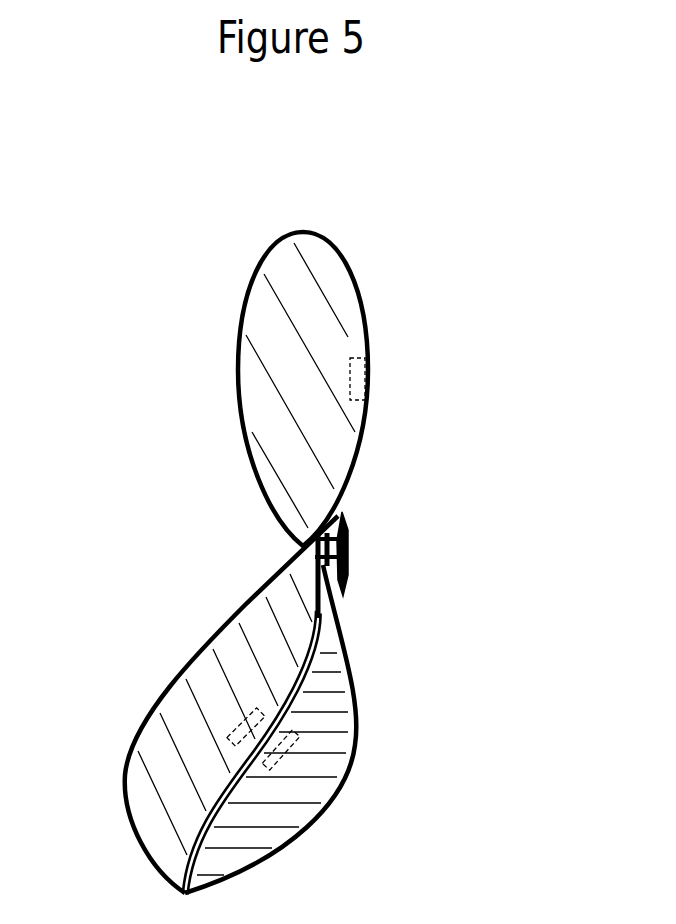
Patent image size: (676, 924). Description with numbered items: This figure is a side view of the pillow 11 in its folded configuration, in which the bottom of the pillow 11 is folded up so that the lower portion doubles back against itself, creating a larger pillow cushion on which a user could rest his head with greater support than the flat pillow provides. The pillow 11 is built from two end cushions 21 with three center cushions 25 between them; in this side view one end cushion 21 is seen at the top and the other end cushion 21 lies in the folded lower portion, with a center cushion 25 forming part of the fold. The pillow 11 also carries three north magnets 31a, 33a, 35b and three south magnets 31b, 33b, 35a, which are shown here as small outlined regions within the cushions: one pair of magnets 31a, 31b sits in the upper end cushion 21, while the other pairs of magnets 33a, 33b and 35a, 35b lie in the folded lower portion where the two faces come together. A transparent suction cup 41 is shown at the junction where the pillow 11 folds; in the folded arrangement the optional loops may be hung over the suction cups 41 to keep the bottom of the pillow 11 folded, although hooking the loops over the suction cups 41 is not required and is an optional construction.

The pillow 11 is at (246, 531).
The end cushion 21 is at (335, 295).
The center cushion 25 is at (256, 617).
The north magnet 31a is at (467, 388).
The south magnet 31b is at (367, 384).
The north magnet 33a is at (150, 660).
The south magnet 33b is at (245, 726).
The south magnet 35a is at (407, 698).
The north magnet 35b is at (290, 742).
The suction cup 41 is at (355, 545).